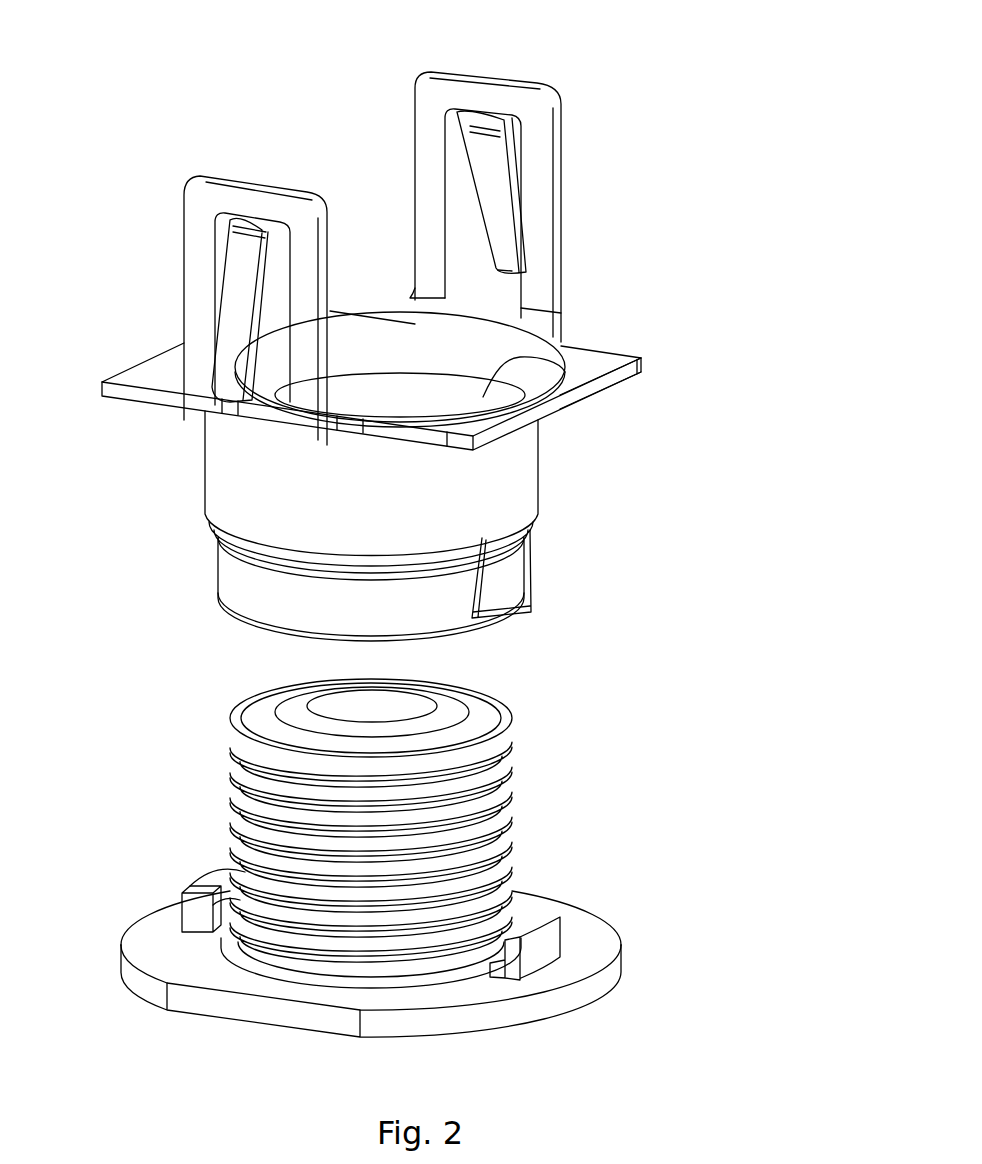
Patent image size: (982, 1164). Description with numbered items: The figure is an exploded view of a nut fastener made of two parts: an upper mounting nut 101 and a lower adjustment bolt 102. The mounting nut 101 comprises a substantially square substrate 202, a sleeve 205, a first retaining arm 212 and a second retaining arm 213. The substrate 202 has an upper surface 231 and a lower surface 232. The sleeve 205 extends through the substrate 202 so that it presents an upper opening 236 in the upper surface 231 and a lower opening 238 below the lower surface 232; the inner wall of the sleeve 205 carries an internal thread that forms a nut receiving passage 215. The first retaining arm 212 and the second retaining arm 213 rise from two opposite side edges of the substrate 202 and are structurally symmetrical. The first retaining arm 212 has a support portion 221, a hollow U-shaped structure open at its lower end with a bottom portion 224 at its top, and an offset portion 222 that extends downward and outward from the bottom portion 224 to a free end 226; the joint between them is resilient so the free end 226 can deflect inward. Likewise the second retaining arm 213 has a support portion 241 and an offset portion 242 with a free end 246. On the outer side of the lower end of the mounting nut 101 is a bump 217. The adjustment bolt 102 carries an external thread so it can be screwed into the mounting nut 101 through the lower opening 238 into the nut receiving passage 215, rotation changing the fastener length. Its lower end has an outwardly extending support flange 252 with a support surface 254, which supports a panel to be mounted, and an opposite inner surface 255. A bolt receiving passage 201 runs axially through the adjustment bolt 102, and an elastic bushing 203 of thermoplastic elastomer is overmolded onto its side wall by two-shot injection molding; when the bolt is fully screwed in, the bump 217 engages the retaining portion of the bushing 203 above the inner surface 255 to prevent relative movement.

The mounting nut 101 is at (694, 181).
The adjustment bolt 102 is at (667, 789).
The bolt receiving passage 201 is at (387, 708).
The substrate 202 is at (645, 362).
The bushing 203 is at (453, 709).
The sleeve 205 is at (527, 497).
The first retaining arm 212 is at (490, 72).
The second retaining arm 213 is at (230, 177).
The nut receiving passage 215 is at (586, 352).
The bump 217 is at (507, 593).
The support portion 221 is at (560, 217).
The offset portion 222 is at (513, 157).
The bottom portion 224 is at (475, 95).
The free end 226 is at (497, 257).
The upper surface 231 is at (603, 353).
The lower surface 232 is at (620, 385).
The upper opening 236 is at (380, 343).
The lower opening 238 is at (273, 627).
The support portion 241 is at (193, 273).
The offset portion 242 is at (190, 340).
The free end 246 is at (233, 338).
The support flange 252 is at (602, 937).
The support surface 254 is at (570, 1010).
The inner surface 255 is at (590, 923).